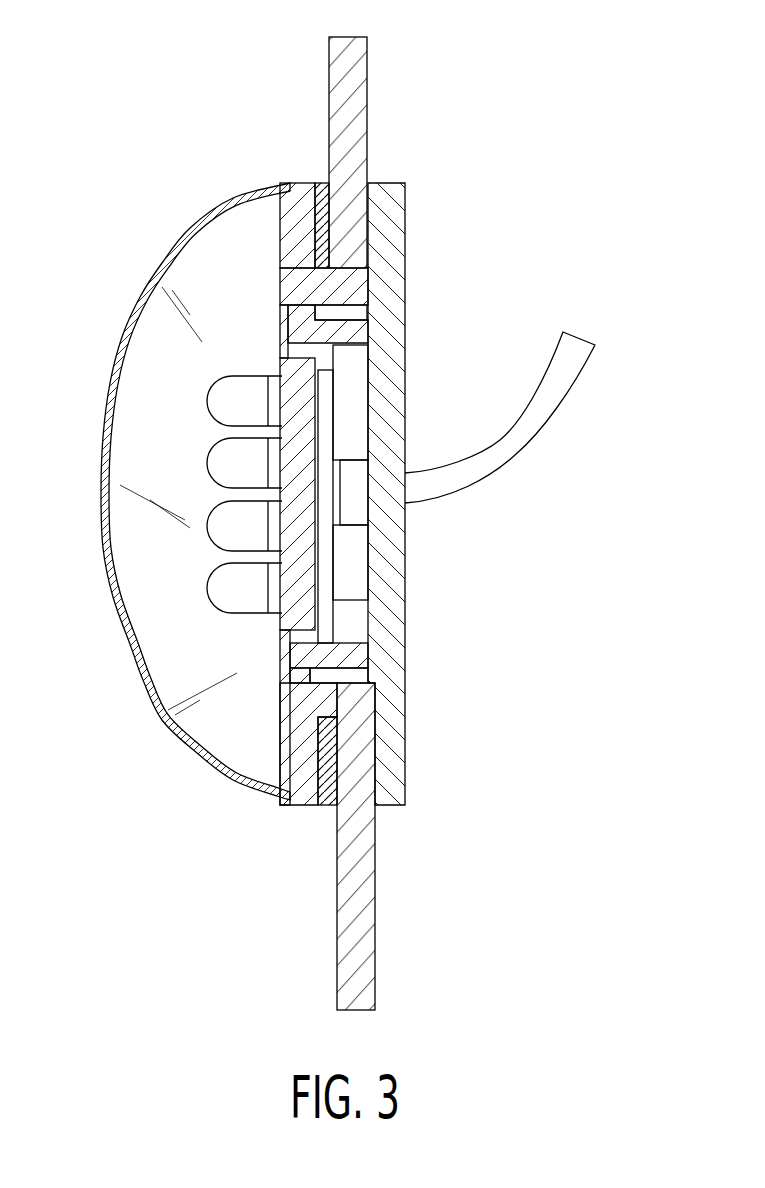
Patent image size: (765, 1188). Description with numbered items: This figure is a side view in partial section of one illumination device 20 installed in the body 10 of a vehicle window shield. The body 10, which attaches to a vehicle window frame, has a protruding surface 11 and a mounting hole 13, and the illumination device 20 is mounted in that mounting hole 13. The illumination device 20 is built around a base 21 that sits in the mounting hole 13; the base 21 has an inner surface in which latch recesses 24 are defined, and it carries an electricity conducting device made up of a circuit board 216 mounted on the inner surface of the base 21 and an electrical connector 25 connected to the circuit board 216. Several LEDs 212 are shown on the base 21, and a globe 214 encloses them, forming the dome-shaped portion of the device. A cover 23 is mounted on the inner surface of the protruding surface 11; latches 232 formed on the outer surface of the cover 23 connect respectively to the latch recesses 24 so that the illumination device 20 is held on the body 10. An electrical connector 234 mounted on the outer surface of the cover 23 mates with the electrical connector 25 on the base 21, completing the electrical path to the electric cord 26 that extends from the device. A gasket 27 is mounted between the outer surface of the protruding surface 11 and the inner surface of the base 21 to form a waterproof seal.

The body 10 is at (369, 60).
The protruding surface 11 is at (360, 918).
The mounting hole 13 is at (353, 705).
The illumination device 20 is at (139, 300).
The base 21 is at (293, 740).
The cover 23 is at (393, 238).
The latch recess 24 is at (291, 352).
The electrical connector 25 is at (332, 472).
The electric cord 26 is at (547, 425).
The gasket 27 is at (322, 185).
The LED 212 is at (212, 590).
The globe 214 is at (140, 680).
The circuit board 216 is at (327, 603).
The latch 232 is at (355, 330).
The electrical connector 234 is at (355, 507).